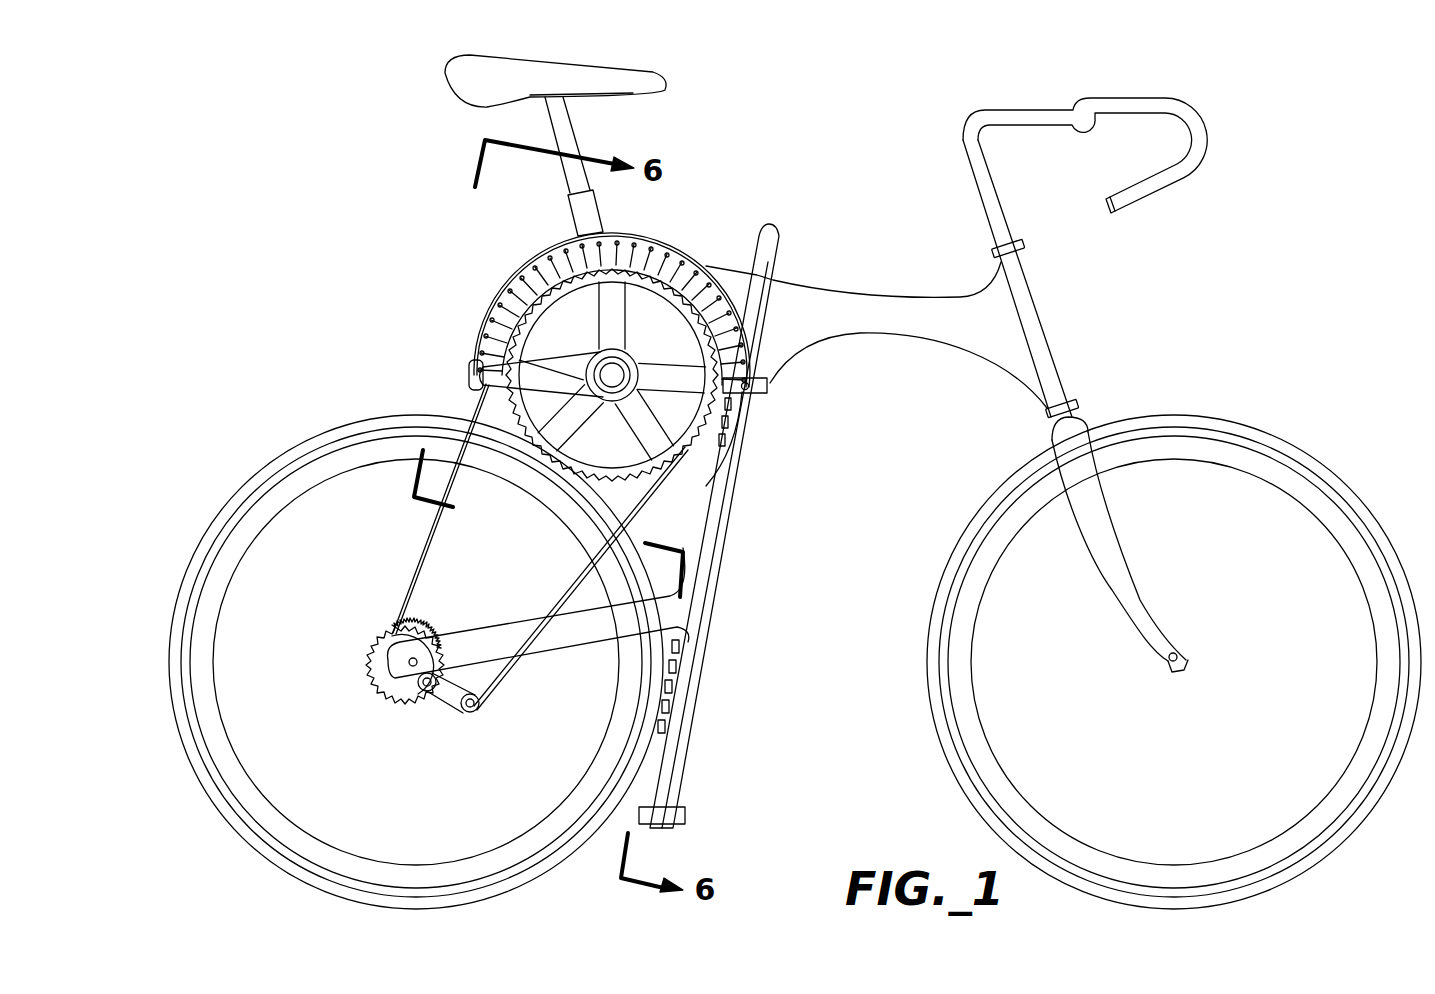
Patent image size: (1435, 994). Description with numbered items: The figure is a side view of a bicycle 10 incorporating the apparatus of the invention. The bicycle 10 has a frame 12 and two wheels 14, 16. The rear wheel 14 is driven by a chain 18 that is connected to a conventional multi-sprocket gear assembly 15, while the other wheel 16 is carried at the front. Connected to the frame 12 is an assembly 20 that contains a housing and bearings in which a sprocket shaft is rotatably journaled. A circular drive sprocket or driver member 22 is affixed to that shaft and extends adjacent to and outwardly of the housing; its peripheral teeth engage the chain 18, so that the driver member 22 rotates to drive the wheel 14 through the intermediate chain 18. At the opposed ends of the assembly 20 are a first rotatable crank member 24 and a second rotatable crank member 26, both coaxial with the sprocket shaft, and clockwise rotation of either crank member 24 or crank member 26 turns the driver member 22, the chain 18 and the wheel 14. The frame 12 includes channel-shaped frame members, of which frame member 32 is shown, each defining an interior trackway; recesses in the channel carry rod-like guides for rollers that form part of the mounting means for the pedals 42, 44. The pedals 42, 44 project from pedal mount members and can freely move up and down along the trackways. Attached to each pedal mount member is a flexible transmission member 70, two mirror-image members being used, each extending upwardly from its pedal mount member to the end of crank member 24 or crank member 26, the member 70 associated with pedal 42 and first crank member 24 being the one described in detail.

The bicycle 10 is at (1043, 320).
The frame 12 is at (876, 336).
The wheel 14 is at (252, 845).
The multi-sprocket gear assembly 15 is at (380, 684).
The wheel 16 is at (1290, 470).
The chain 18 is at (427, 550).
The assembly 20 is at (598, 353).
The drive sprocket or driver member 22 is at (567, 478).
The first rotatable crank member 24 is at (481, 394).
The second rotatable crank member 26 is at (660, 365).
The frame member 32 is at (712, 614).
The pedal 42 is at (767, 390).
The pedal 44 is at (690, 815).
The flexible transmission member 70 is at (548, 252).